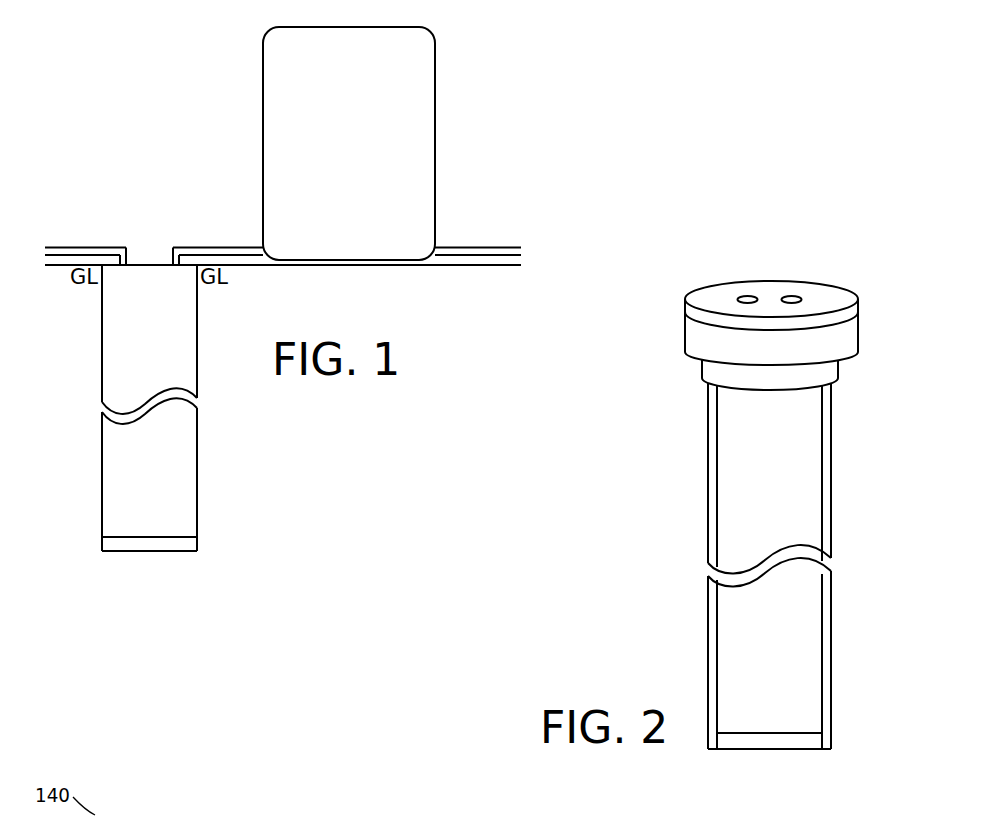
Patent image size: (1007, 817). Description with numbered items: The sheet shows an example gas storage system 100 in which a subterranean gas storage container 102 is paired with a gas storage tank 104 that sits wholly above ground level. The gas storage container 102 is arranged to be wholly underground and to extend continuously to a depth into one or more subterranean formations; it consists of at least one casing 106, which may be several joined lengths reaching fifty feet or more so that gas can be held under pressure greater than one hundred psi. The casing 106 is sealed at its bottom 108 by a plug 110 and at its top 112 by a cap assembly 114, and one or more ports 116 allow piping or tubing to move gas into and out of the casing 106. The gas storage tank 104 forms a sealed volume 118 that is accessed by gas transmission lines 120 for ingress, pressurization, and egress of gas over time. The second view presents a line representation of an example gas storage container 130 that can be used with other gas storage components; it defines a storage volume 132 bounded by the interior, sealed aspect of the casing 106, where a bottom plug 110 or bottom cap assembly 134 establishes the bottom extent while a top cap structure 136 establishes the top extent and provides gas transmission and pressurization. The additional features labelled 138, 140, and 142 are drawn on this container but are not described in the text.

In FIG. 1, the gas storage system 100 is at (107, 47).
In FIG. 1, the gas storage container 102 is at (167, 376).
In FIG. 1, the gas storage tank 104 is at (367, 154).
In FIG. 1, the casing 106 is at (102, 471).
In FIG. 2, the casing 106 is at (708, 649).
In FIG. 1, the bottom 108 is at (205, 542).
In FIG. 1, the plug 110 is at (127, 537).
In FIG. 2, the plug 110 is at (740, 730).
In FIG. 1, the top 112 is at (153, 259).
In FIG. 1, the cap assembly 114 is at (153, 267).
In FIG. 1, the ports 116 is at (118, 278).
In FIG. 2, the ports 116 is at (746, 294).
In FIG. 1, the sealed volume 118 is at (267, 82).
In FIG. 1, the gas transmission lines 120 is at (253, 247).
In FIG. 2, the gas storage container 130 is at (858, 229).
In FIG. 2, the storage volume 132 is at (788, 523).
In FIG. 2, the bottom cap assembly 134 is at (866, 327).
In FIG. 2, the top cap structure 136 is at (877, 485).
In FIG. 2, the bottom edge 138 is at (815, 739).
In FIG. 2, the neck 140 is at (703, 380).
In FIG. 2, the cap top surface 142 is at (685, 323).